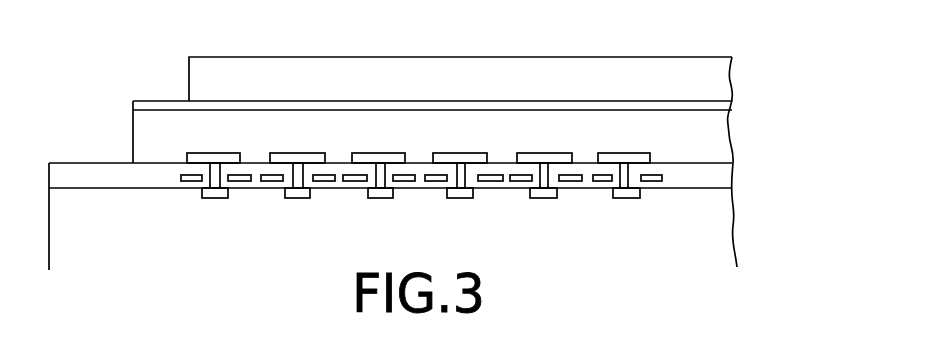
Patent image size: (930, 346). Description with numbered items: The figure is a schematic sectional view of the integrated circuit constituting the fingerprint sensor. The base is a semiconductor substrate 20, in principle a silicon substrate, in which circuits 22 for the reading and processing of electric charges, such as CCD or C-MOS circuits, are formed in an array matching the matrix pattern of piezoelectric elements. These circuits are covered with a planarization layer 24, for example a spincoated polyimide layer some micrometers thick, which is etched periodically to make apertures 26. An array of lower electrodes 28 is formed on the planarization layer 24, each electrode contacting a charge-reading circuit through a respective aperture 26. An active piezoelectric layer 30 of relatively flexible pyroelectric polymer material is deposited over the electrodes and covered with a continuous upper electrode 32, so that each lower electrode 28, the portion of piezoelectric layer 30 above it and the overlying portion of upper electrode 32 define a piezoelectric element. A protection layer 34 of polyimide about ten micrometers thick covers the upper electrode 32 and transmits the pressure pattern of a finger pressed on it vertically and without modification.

The semiconductor substrate 20 is at (722, 237).
The circuits for reading and processing electric charges 22 is at (578, 178).
The planarization layer 24 is at (718, 176).
The apertures 26 is at (378, 182).
The lower electrodes 28 is at (297, 153).
The active piezoelectric layer 30 is at (713, 134).
The upper electrode 32 is at (713, 104).
The protection layer 34 is at (710, 67).